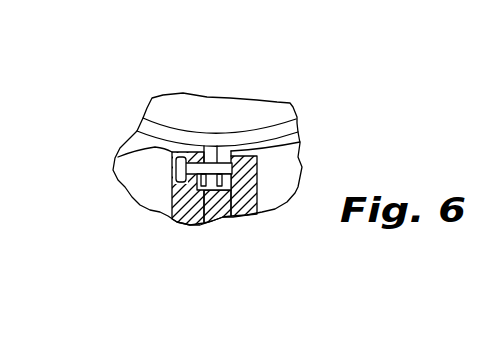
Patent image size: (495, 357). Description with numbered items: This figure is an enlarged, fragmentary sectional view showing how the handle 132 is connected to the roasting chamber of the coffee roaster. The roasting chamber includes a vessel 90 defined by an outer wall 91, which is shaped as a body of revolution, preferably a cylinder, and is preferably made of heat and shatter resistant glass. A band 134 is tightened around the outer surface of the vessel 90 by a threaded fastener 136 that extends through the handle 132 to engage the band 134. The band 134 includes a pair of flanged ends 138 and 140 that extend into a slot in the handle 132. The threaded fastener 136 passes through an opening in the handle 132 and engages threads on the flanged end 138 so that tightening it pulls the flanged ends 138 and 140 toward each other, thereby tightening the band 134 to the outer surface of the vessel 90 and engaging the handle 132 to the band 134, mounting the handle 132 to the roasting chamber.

The vessel 90 is at (258, 136).
The outer wall 91 is at (207, 134).
The handle 132 is at (266, 183).
The band 134 is at (118, 157).
The threaded fastener 136 is at (172, 179).
The flanged end 138 is at (228, 218).
The flanged end 140 is at (207, 198).